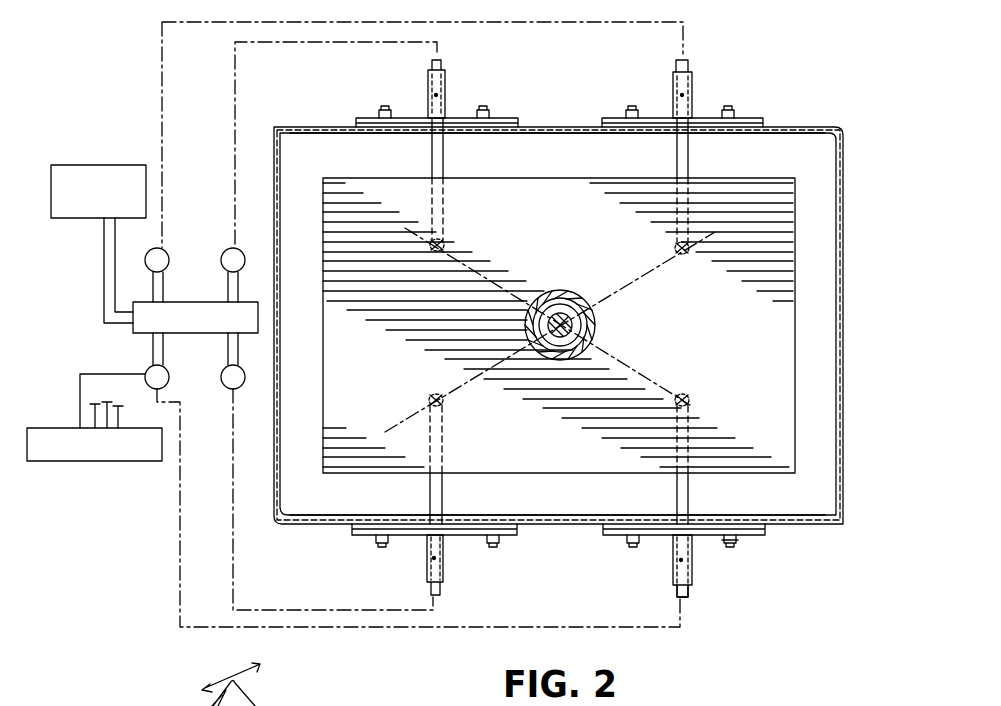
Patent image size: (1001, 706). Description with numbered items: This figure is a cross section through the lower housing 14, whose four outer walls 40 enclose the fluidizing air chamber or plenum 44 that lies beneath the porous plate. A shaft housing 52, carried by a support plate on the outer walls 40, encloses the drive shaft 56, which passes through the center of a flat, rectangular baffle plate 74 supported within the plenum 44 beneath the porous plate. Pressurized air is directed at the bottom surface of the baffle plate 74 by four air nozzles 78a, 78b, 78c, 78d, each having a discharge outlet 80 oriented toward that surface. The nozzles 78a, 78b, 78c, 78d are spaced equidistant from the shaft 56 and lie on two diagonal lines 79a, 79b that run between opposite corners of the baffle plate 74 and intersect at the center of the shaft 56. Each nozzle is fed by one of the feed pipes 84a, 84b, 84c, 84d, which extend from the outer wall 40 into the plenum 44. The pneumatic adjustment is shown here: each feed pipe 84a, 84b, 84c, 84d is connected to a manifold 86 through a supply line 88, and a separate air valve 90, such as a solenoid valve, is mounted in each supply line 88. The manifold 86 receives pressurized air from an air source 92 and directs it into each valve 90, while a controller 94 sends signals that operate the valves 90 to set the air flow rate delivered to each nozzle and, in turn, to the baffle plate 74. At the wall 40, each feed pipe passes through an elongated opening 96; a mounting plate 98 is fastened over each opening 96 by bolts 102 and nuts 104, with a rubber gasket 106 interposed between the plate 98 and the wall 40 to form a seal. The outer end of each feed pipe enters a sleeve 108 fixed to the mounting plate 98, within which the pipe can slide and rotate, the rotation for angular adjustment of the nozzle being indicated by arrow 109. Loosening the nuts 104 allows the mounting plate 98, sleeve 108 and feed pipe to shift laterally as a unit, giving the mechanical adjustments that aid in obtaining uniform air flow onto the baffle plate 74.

The lower housing 14 is at (796, 586).
The outer walls 40 is at (825, 150).
The fluidizing air chamber or plenum 44 is at (773, 152).
The shaft housing 52 is at (596, 326).
The drive shaft 56 is at (576, 300).
The baffle plate 74 is at (795, 342).
The air nozzle 78a is at (452, 243).
The air nozzle 78b is at (684, 256).
The air nozzle 78c is at (428, 393).
The air nozzle 78d is at (690, 396).
The diagonal line 79a is at (637, 272).
The diagonal line 79b is at (654, 357).
The discharge outlet 80 is at (245, 680).
The feed pipe 84a is at (446, 163).
The feed pipe 84b is at (676, 163).
The feed pipe 84c is at (445, 495).
The feed pipe 84d is at (690, 492).
The manifold 86 is at (212, 302).
The supply line 88 is at (537, 28).
The air valve 90 is at (222, 252).
The air source 92 is at (126, 165).
The controller 94 is at (100, 462).
The elongated opening 96 is at (425, 512).
The mounting plate 98 is at (518, 533).
The bolt 102 is at (729, 548).
The nut 104 is at (740, 543).
The rubber gasket 106 is at (520, 528).
The sleeve 108 is at (692, 586).
The arrow 109 is at (220, 668).